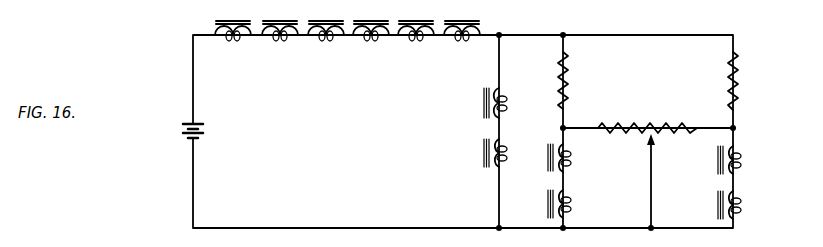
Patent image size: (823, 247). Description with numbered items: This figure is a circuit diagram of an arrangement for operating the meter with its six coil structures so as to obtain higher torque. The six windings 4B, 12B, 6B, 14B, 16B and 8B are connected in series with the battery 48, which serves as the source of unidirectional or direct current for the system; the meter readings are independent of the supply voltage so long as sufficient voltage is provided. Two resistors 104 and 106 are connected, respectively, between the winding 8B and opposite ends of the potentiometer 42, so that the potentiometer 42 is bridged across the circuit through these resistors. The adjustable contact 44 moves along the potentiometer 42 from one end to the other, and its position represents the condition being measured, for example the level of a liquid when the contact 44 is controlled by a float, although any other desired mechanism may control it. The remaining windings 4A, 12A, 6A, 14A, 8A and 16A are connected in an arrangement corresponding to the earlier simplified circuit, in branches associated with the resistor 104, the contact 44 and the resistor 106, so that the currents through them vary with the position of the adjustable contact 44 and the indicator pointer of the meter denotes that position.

The winding 4B is at (226, 41).
The winding 12B is at (272, 41).
The winding 6B is at (319, 41).
The winding 14B is at (368, 41).
The winding 16B is at (413, 41).
The winding 8B is at (460, 41).
The battery 48 is at (206, 133).
The winding 4A is at (508, 103).
The winding 12A is at (511, 152).
The resistor 104 is at (568, 83).
The winding 6A is at (571, 161).
The winding 14A is at (571, 206).
The resistor 106 is at (739, 84).
The winding 8A is at (741, 162).
The winding 16A is at (741, 206).
The potentiometer 42 is at (658, 124).
The adjustable contact 44 is at (656, 142).